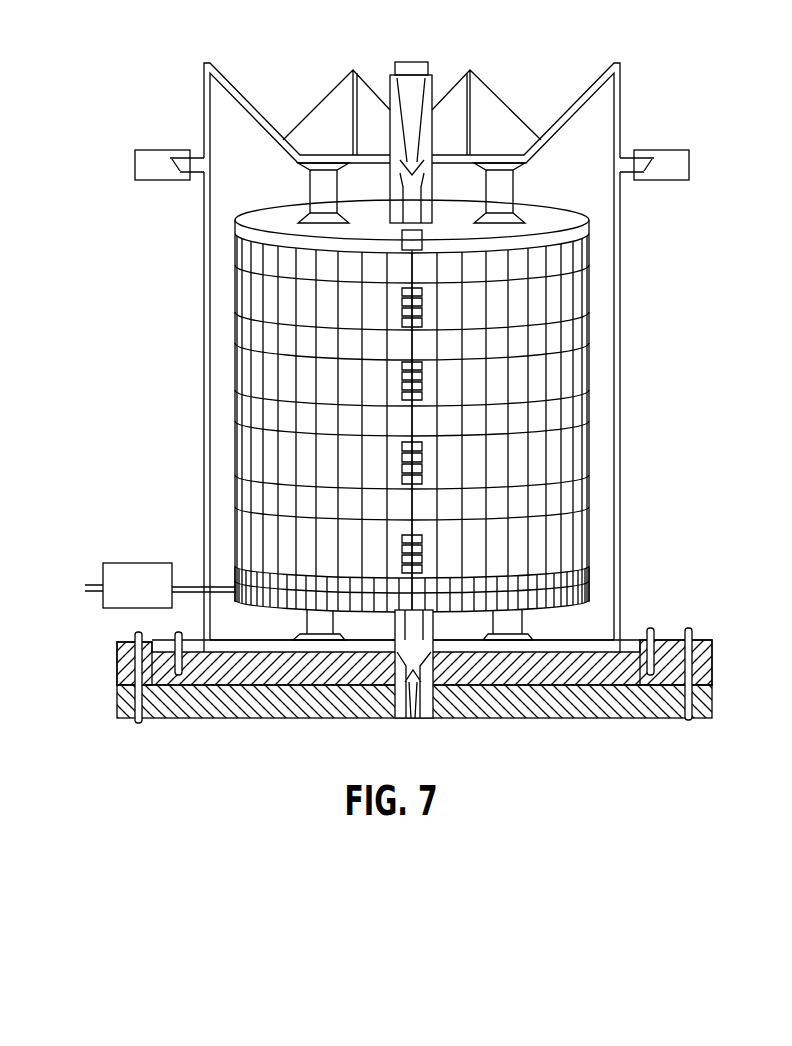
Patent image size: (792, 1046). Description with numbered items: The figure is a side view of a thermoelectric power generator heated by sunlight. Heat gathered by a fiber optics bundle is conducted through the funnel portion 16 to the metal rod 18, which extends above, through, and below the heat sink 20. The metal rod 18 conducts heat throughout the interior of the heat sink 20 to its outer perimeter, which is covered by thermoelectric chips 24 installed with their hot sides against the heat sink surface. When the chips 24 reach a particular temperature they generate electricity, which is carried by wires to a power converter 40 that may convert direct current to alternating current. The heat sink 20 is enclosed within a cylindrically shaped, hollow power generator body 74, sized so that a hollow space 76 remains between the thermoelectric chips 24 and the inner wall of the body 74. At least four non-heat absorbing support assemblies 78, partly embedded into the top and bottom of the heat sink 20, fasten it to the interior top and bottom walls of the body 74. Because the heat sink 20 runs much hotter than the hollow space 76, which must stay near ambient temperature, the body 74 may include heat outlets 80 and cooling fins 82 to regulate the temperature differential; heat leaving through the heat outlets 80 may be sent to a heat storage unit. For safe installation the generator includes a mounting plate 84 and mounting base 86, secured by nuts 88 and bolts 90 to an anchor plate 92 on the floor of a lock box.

The funnel portion 16 is at (409, 90).
The metal rod 18 is at (410, 182).
The heat sink 20 is at (262, 212).
The thermoelectric chips 24 is at (245, 262).
The power converter 40 is at (122, 563).
The thermoelectric power generator body 74 is at (204, 358).
The hollow space 76 is at (618, 278).
The support assemblies 78 is at (322, 193).
The heat outlets 80 is at (167, 150).
The cooling fins 82 is at (480, 93).
The mounting plate 84 is at (663, 642).
The mounting base 86 is at (117, 655).
The nuts 88 is at (693, 635).
The bolts 90 is at (690, 668).
The anchor plate 92 is at (705, 703).